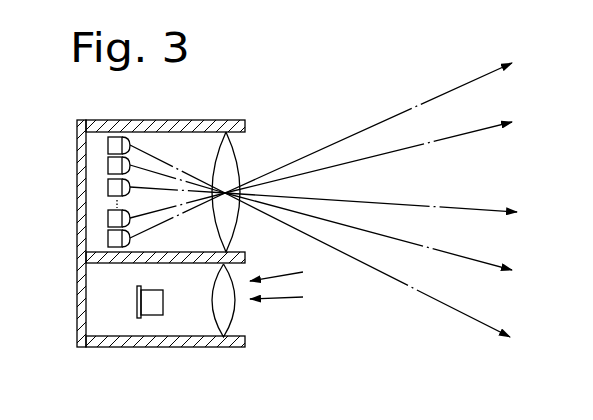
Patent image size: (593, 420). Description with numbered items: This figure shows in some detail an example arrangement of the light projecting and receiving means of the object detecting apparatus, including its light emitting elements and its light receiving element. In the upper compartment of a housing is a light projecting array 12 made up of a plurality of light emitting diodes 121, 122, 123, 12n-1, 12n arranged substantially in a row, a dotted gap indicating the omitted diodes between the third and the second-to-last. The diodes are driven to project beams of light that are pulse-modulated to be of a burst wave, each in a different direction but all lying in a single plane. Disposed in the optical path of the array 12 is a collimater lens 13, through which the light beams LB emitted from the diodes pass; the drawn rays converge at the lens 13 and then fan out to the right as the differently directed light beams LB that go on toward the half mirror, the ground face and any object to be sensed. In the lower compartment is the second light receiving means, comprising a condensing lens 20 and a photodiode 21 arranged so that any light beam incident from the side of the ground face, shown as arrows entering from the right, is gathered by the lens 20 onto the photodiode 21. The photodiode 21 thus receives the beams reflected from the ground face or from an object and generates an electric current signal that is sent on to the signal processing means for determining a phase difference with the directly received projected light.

The light projecting array 12 is at (87, 177).
The light emitting diode 121 is at (118, 140).
The light emitting diode 122 is at (112, 162).
The light emitting diode 123 is at (108, 186).
The light emitting diode 12n-1 is at (108, 216).
The light emitting diode 12n is at (108, 243).
The collimater lens 13 is at (235, 163).
The light beams LB is at (338, 140).
The condensing lens 20 is at (227, 316).
The photodiode 21 is at (157, 307).